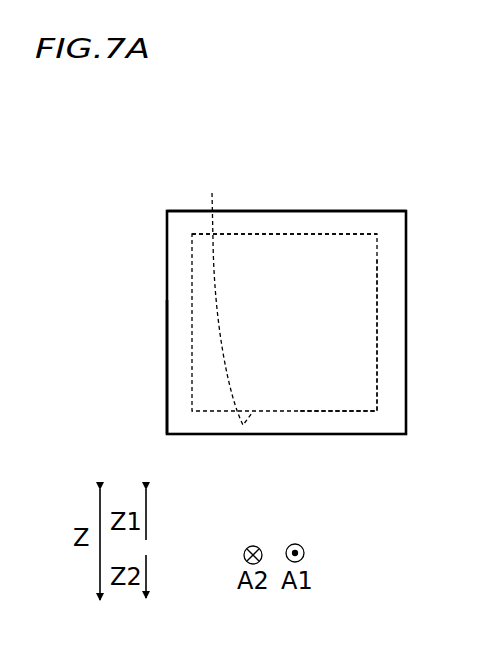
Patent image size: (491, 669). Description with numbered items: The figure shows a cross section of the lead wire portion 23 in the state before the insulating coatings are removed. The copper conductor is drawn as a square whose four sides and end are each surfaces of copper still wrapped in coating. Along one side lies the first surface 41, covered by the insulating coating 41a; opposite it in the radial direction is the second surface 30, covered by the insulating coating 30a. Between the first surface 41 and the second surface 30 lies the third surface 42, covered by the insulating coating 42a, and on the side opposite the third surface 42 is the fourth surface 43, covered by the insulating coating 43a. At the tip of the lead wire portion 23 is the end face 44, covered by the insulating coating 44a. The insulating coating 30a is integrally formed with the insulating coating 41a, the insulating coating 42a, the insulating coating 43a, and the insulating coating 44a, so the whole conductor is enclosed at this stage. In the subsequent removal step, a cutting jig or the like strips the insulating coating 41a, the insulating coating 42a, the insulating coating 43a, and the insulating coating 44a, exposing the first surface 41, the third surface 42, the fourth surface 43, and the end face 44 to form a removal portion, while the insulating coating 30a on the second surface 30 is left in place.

The lead wire portion 23 is at (245, 257).
The second surface 30 is at (187, 288).
The insulating coating 30a is at (177, 377).
The first surface 41 is at (382, 258).
The insulating coating 41a is at (393, 322).
The third surface 42 is at (328, 232).
The insulating coating 42a is at (342, 222).
The fourth surface 43 is at (224, 293).
The insulating coating 43a is at (348, 418).
The end face 44 is at (353, 392).
The insulating coating 44a is at (303, 357).